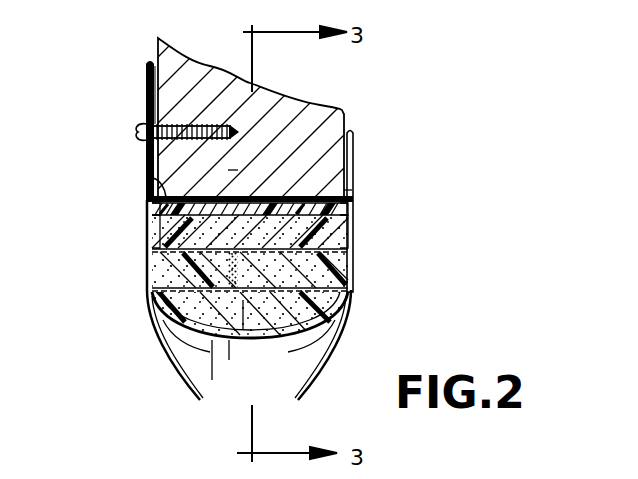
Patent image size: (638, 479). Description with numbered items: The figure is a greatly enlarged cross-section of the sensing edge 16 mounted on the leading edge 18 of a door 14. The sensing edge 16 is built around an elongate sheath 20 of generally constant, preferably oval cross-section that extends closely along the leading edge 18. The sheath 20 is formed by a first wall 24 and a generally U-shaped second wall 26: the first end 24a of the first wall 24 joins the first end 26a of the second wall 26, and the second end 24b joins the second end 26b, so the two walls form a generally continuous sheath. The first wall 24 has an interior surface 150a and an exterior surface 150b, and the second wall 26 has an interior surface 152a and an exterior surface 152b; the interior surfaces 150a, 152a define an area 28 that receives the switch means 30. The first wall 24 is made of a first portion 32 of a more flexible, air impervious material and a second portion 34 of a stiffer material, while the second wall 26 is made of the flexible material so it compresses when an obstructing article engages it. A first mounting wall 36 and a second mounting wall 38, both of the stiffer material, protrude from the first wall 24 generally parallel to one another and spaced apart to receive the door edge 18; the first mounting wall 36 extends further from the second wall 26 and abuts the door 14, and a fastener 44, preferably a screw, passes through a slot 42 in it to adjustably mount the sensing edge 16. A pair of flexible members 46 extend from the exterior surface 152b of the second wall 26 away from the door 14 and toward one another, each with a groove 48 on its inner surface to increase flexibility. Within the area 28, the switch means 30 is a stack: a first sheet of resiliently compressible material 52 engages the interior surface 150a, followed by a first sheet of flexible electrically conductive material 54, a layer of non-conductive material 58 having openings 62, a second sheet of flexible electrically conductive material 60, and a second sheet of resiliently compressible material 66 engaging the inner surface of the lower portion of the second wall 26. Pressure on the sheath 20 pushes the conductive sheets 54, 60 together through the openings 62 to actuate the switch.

The door 14 is at (205, 76).
The sensing edge 16 is at (148, 268).
The leading edge 18 is at (147, 172).
The sheath 20 is at (365, 278).
The first wall 24 is at (236, 201).
The first end of first wall 24a is at (148, 201).
The second end of first wall 24b is at (357, 205).
The second wall 26 is at (148, 248).
The first end of second wall 26a is at (148, 209).
The second end of second wall 26b is at (357, 222).
The area 28 is at (356, 243).
The switch means 30 is at (357, 264).
The first portion 32 is at (298, 201).
The second portion 34 is at (186, 201).
The first mounting wall 36 is at (150, 64).
The second mounting wall 38 is at (357, 150).
The slot 42 is at (150, 98).
The fastener 44 is at (136, 130).
The flexible members 46 is at (162, 350).
The groove 48 is at (208, 340).
The first sheet of resiliently compressible material 52 is at (357, 226).
The first sheet of flexible electrically conductive material 54 is at (148, 226).
The layer of non-conductive material 58 is at (148, 280).
The second sheet of flexible electrically conductive material 60 is at (336, 311).
The openings 62 is at (243, 330).
The second sheet of resiliently compressible material 66 is at (157, 310).
The interior surface of first wall 150a is at (357, 193).
The exterior surface of first wall 150b is at (235, 170).
The interior surface of second wall 152a is at (212, 380).
The exterior surface of second wall 152b is at (229, 360).